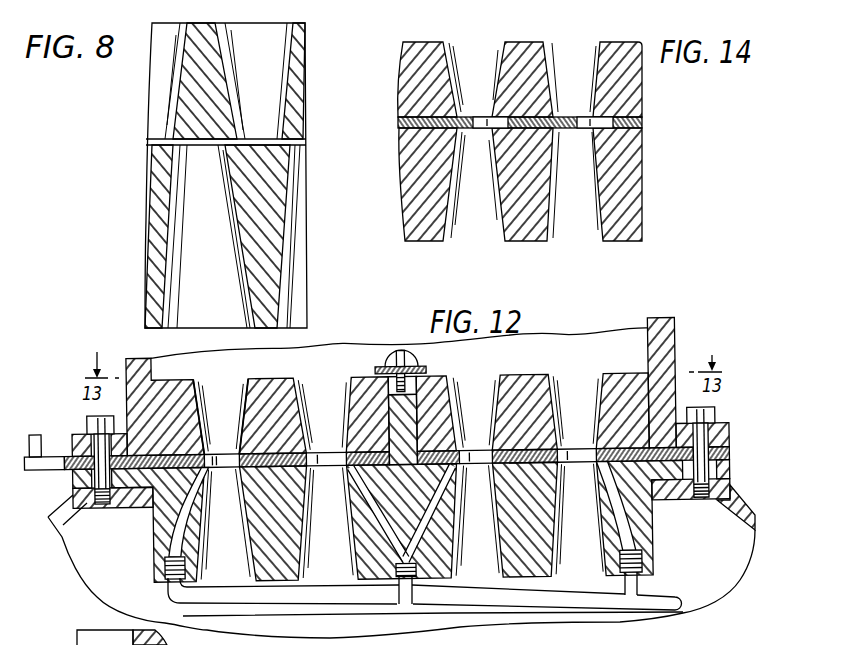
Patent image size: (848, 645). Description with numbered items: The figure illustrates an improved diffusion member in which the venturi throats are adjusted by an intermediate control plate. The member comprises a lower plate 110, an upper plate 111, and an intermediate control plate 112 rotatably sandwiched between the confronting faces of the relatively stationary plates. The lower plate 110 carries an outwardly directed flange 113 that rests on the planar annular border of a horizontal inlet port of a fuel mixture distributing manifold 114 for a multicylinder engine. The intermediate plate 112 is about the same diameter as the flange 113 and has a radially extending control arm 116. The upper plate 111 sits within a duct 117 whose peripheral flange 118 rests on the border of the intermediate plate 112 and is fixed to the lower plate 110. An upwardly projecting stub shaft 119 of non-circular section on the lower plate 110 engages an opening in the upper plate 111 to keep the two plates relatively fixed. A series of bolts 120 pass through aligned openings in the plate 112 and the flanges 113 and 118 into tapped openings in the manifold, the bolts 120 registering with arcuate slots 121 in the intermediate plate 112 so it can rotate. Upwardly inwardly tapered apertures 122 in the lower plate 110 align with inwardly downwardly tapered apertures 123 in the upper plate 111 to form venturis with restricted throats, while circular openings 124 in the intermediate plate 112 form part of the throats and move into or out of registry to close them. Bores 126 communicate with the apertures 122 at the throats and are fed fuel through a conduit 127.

In FIG. 12, the lower plate 110 is at (162, 538).
In FIG. 14, the upper plate 111 is at (615, 52).
In FIG. 12, the upper plate 111 is at (172, 397).
In FIG. 12, the intermediate control plate 112 is at (677, 484).
In FIG. 12, the outwardly directed flange 113 is at (90, 472).
In FIG. 12, the fuel mixture distributing manifold 114 is at (759, 506).
In FIG. 12, the radially extending control arm 116 is at (50, 468).
In FIG. 12, the duct 117 is at (677, 320).
In FIG. 12, the peripheral flange 118 is at (730, 439).
In FIG. 12, the stub shaft 119 is at (428, 368).
In FIG. 12, the bolts 120 is at (97, 457).
In FIG. 12, the arcuate slots 121 is at (125, 489).
In FIG. 14, the upwardly inwardly tapered apertures 122 is at (445, 230).
In FIG. 12, the upwardly inwardly tapered apertures 122 is at (196, 538).
In FIG. 14, the inwardly downwardly tapered apertures 123 is at (447, 53).
In FIG. 12, the inwardly downwardly tapered apertures 123 is at (200, 394).
In FIG. 12, the circular openings 124 is at (263, 450).
In FIG. 12, the bores 126 is at (182, 515).
In FIG. 12, the conduit 127 is at (542, 608).